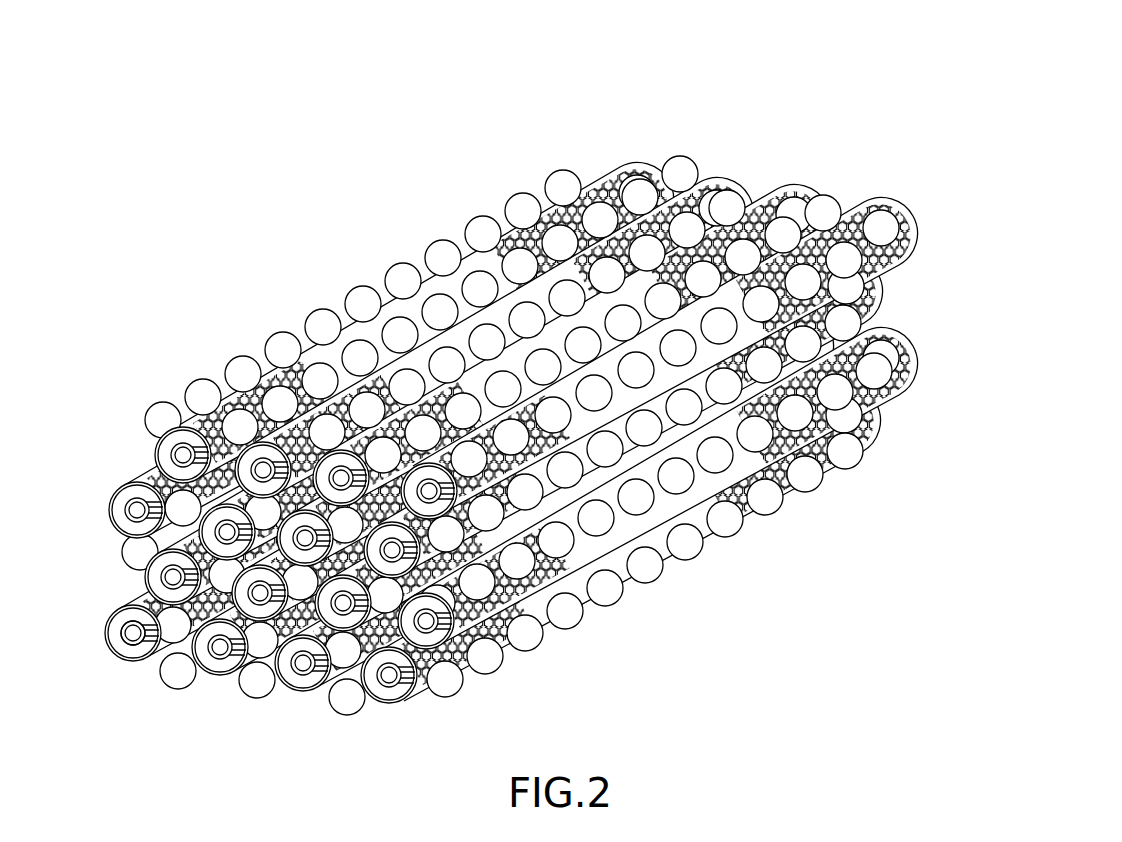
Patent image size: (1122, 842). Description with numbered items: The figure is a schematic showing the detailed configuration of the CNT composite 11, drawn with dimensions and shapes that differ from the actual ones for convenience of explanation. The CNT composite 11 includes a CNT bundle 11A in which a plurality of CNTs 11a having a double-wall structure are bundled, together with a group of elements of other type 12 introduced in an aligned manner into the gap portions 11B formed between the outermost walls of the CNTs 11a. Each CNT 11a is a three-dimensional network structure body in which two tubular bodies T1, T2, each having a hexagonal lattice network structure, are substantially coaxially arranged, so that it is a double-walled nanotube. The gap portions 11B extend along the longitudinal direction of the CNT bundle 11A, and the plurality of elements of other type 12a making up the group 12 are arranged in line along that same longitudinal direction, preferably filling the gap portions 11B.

The CNT composite 11 is at (514, 389).
The CNT 11a is at (636, 166).
The CNT bundle 11A is at (657, 103).
The gap portion 11B is at (200, 500).
The group of elements of other type 12 is at (477, 422).
The element of other type 12a is at (163, 401).
The tubular body T1 is at (146, 652).
The tubular body T2 is at (106, 662).